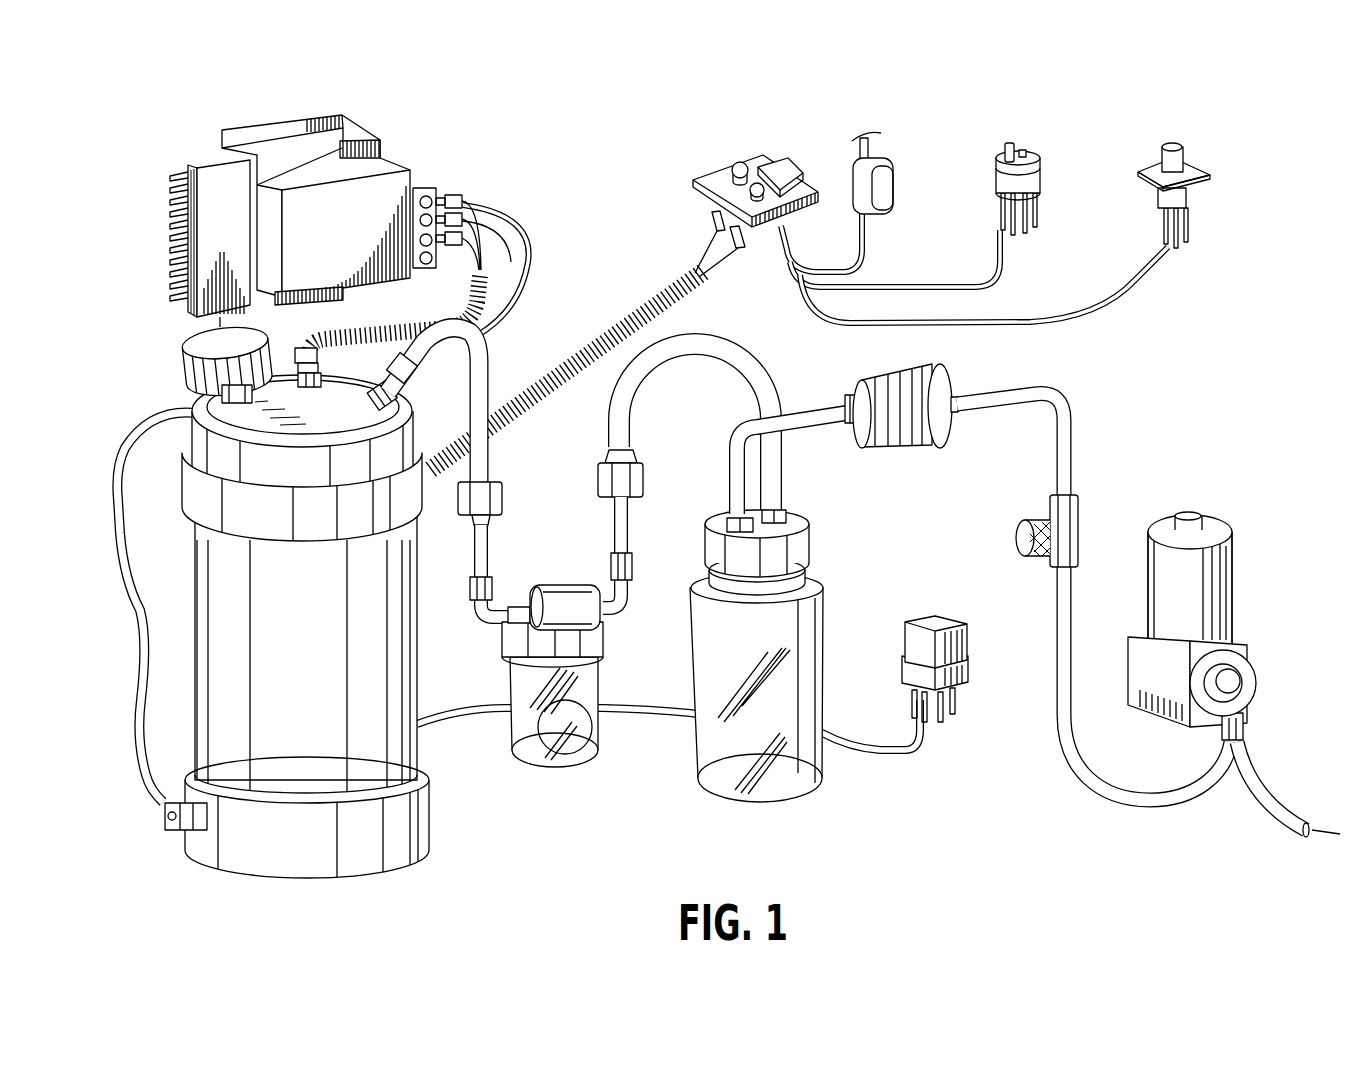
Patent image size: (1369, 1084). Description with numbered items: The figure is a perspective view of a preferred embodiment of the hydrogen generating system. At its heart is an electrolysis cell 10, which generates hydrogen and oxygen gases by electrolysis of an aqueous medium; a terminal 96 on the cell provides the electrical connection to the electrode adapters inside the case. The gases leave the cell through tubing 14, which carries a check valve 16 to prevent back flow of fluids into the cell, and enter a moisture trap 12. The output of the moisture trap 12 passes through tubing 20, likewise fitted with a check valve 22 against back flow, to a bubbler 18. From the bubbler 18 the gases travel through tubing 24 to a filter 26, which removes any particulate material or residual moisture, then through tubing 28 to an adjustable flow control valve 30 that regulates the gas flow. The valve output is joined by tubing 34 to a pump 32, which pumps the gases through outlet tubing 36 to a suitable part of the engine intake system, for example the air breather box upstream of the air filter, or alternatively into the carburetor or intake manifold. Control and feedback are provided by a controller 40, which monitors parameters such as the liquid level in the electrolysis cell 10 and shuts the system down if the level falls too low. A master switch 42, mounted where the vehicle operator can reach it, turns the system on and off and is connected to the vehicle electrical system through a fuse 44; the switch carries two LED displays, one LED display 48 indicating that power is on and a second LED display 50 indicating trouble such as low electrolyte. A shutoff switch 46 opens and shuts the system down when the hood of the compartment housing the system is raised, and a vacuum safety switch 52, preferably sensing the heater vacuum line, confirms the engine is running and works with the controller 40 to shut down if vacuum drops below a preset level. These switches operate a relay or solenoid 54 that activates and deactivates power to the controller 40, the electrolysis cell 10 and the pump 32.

The electrolysis cell 10 is at (368, 768).
The moisture trap 12 is at (570, 757).
The tubing 14 is at (480, 352).
The check valve 16 is at (503, 497).
The bubbler 18 is at (770, 783).
The tubing 20 is at (712, 338).
The check valve 22 is at (648, 478).
The tubing 24 is at (815, 420).
The filter 26 is at (938, 378).
The tubing 28 is at (1065, 410).
The flow control valve 30 is at (1070, 515).
The pump 32 is at (1213, 582).
The tubing 34 is at (1077, 763).
The tubing 36 is at (1263, 800).
The controller 40 is at (417, 146).
The master switch 42 is at (781, 153).
The fuse 44 is at (890, 183).
The shutoff switch 46 is at (1195, 176).
The LED display 48 is at (740, 158).
The LED display 50 is at (694, 180).
The vacuum safety switch 52 is at (1038, 178).
The relay or solenoid 54 is at (933, 616).
The terminal 96 is at (172, 832).